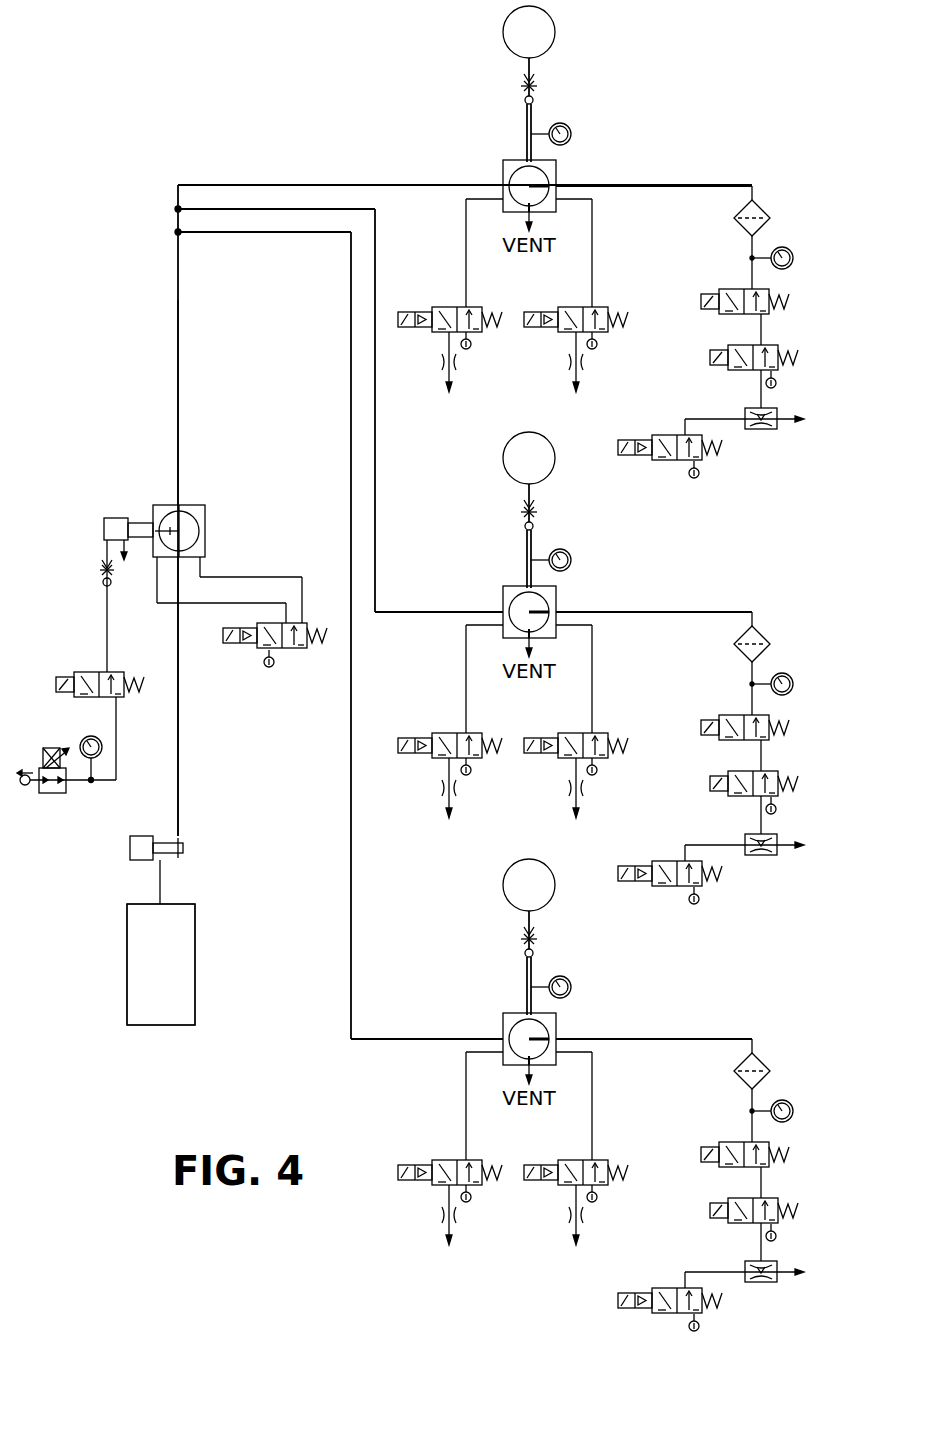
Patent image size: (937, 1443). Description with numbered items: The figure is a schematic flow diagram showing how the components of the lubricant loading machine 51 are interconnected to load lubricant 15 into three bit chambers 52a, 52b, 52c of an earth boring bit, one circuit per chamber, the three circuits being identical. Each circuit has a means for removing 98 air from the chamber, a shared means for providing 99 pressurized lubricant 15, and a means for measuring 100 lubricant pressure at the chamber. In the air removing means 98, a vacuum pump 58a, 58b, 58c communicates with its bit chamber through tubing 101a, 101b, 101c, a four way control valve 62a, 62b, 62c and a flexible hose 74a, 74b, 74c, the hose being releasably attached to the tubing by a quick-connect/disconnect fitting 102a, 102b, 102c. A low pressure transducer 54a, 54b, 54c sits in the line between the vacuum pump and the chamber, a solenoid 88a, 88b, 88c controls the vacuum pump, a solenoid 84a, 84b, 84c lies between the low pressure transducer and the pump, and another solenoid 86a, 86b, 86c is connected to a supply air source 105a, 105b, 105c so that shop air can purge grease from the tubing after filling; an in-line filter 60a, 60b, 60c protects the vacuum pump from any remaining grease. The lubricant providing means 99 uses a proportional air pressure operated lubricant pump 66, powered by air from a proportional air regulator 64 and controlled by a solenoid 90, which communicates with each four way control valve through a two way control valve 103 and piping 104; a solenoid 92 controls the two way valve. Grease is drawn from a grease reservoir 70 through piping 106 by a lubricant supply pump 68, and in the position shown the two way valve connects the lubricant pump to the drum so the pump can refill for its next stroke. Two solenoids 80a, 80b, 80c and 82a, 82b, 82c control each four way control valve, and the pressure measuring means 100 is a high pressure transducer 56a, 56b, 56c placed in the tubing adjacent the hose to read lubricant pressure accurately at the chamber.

The lubricant 15 is at (195, 962).
The lubricant loading machine 51 is at (292, 1032).
The bit chamber 52a is at (502, 32).
The bit chamber 52b is at (487, 458).
The bit chamber 52c is at (487, 885).
The low pressure transducer 54a is at (794, 256).
The low pressure transducer 54b is at (808, 667).
The low pressure transducer 54c is at (807, 1094).
The high pressure transducer 56a is at (572, 134).
The high pressure transducer 56b is at (596, 555).
The high pressure transducer 56c is at (595, 982).
The vacuum pump 58a is at (770, 430).
The vacuum pump 58b is at (792, 859).
The vacuum pump 58c is at (791, 1286).
The in-line filter 60a is at (762, 208).
The in-line filter 60b is at (773, 623).
The in-line filter 60c is at (772, 1050).
The four way control valve 62a is at (557, 173).
The four way control valve 62b is at (573, 605).
The four way control valve 62c is at (572, 1032).
The proportional air regulator 64 is at (50, 795).
The lubricant pump 66 is at (106, 518).
The lubricant supply pump 68 is at (133, 852).
The grease reservoir 70 is at (127, 965).
The flexible hose 74a is at (527, 72).
The flexible hose 74b is at (476, 501).
The flexible hose 74c is at (476, 928).
The solenoid 80a is at (442, 306).
The solenoid 80b is at (450, 748).
The solenoid 80c is at (450, 1175).
The solenoid 82a is at (600, 306).
The solenoid 82b is at (599, 754).
The solenoid 82c is at (598, 1181).
The solenoid 84a is at (770, 294).
The solenoid 84b is at (780, 715).
The solenoid 84c is at (779, 1142).
The solenoid 86a is at (779, 350).
The solenoid 86b is at (782, 770).
The solenoid 86c is at (781, 1197).
The solenoid 88a is at (665, 436).
The solenoid 88b is at (662, 864).
The solenoid 88c is at (662, 1291).
The solenoid 90 is at (90, 672).
The solenoid 92 is at (292, 650).
The means for removing air 98 is at (804, 210).
The means for providing pressurized lubricant 99 is at (368, 182).
The means for measuring pressure 100 is at (664, 126).
The tubing 101a is at (526, 145).
The tubing 101b is at (475, 559).
The tubing 101c is at (475, 986).
The quick-connect/disconnect fitting 102a is at (534, 100).
The quick-connect/disconnect fitting 102b is at (580, 518).
The quick-connect/disconnect fitting 102c is at (579, 945).
The two way control valve 103 is at (206, 518).
The piping 104 is at (180, 382).
The supply air source 105a is at (777, 386).
The supply air source 105b is at (813, 815).
The supply air source 105c is at (813, 1242).
The piping 106 is at (180, 784).